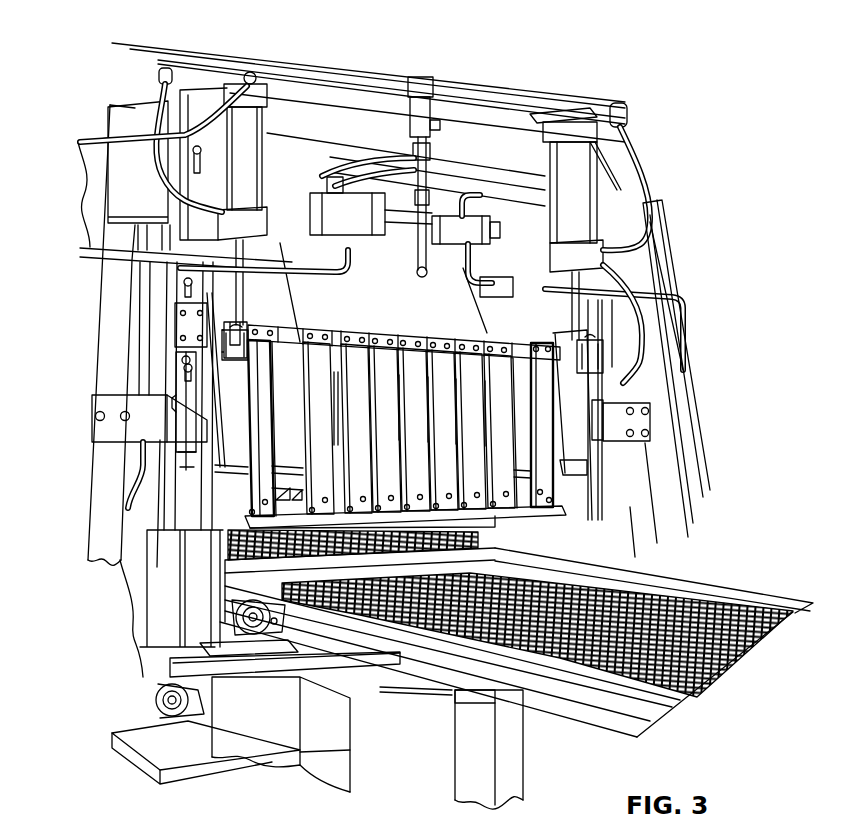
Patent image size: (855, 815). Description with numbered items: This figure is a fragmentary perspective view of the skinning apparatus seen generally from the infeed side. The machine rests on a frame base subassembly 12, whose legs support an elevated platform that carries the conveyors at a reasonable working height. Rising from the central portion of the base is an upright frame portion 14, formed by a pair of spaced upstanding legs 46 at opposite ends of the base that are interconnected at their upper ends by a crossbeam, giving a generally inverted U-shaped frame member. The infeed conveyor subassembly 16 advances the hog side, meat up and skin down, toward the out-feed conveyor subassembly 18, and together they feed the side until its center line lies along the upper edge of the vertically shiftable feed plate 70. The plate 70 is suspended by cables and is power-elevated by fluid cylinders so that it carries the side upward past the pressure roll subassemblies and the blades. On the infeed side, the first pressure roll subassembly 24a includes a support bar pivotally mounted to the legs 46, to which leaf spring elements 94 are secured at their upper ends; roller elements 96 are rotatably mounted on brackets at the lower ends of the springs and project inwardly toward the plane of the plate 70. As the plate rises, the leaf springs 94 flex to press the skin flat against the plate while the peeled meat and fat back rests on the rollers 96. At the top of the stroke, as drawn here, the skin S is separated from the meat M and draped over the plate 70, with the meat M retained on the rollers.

The frame base subassembly 12 is at (340, 773).
The upright frame portion 14 is at (97, 351).
The infeed conveyor subassembly 16 is at (716, 614).
The out-feed conveyor subassembly 18 is at (473, 537).
The first pressure roll subassembly 24a is at (553, 390).
The upstanding legs 46 is at (451, 751).
The feed plate 70 is at (282, 308).
The leaf spring elements 94 is at (429, 407).
The roller elements 96 is at (225, 545).
The skin S is at (396, 309).
The meat and fat back M is at (296, 450).